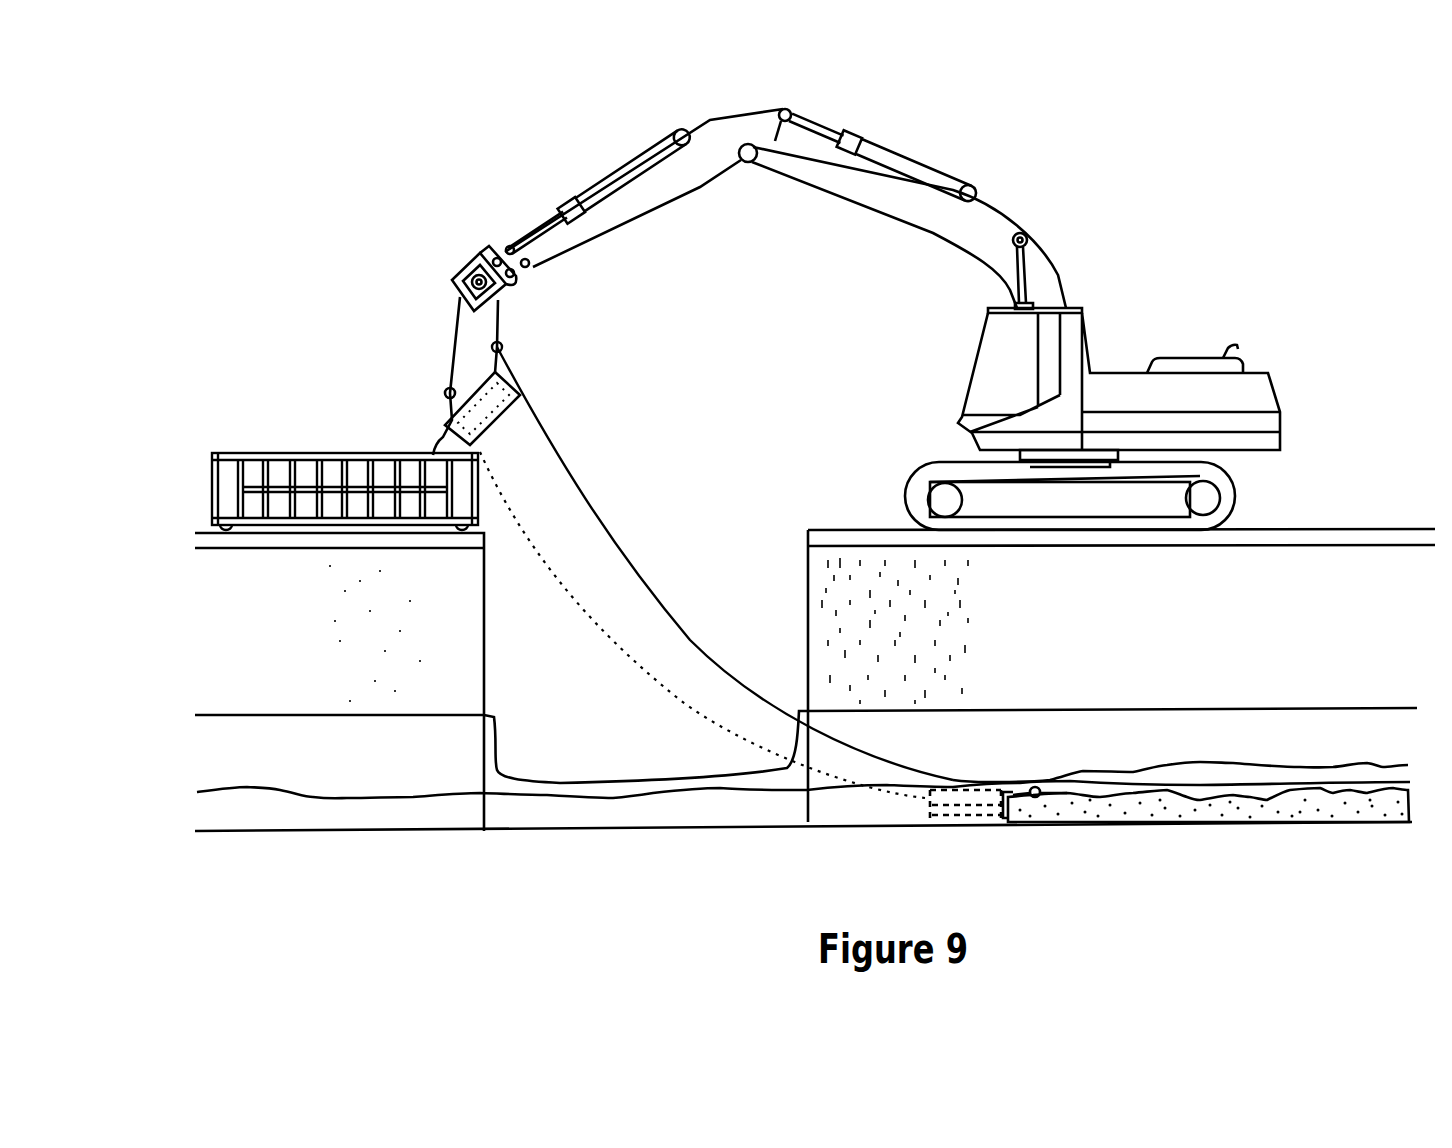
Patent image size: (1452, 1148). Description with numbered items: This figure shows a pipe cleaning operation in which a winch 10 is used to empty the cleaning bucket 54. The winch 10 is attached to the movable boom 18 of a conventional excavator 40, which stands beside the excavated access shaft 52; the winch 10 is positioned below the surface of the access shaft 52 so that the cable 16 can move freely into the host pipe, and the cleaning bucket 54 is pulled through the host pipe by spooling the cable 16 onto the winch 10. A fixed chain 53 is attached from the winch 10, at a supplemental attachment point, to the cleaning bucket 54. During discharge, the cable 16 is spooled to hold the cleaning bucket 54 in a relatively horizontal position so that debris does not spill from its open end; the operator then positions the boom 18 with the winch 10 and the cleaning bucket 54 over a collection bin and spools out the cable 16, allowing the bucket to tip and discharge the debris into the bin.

The winch 10 is at (468, 262).
The cable 16 is at (453, 352).
The movable boom 18 is at (702, 118).
The excavator 40 is at (1147, 300).
The excavated access shaft 52 is at (693, 466).
The fixed chain 53 is at (501, 341).
The cleaning bucket 54 is at (494, 424).